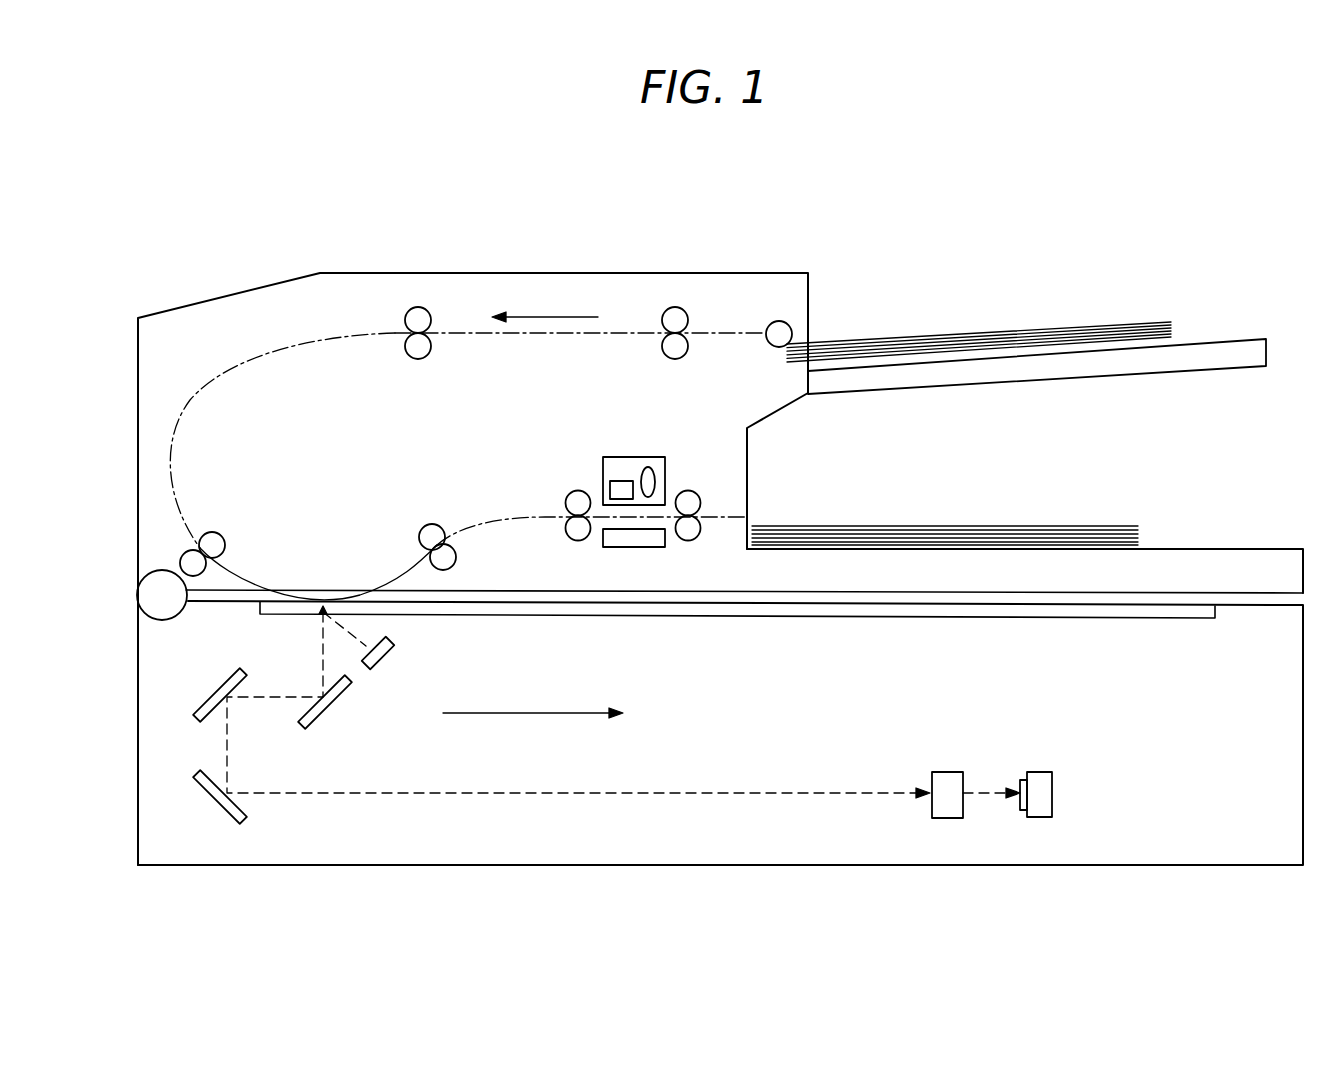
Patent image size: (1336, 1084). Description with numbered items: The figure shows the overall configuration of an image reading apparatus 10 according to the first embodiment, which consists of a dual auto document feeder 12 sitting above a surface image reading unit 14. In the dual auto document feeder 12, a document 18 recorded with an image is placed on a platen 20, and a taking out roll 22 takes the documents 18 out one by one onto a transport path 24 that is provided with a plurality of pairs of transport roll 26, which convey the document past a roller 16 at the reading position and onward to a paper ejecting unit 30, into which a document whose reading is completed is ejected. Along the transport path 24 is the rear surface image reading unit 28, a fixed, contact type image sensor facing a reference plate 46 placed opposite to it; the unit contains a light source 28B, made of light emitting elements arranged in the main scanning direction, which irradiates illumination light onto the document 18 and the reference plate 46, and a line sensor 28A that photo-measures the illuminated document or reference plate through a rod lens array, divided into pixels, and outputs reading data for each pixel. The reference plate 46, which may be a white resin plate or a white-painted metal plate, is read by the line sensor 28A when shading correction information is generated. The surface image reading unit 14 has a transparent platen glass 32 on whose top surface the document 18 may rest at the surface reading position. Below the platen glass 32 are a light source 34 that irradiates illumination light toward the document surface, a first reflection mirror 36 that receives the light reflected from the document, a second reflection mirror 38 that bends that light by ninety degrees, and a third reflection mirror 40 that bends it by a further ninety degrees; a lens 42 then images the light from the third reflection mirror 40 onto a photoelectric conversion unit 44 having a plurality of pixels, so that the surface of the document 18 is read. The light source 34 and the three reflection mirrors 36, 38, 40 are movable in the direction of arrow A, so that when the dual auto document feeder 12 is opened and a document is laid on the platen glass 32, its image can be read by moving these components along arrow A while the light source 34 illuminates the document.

The image reading apparatus 10 is at (1201, 207).
The dual auto document feeder (DADF) 12 is at (138, 437).
The surface image reading unit 14 is at (138, 752).
The platen roller 16 is at (139, 597).
The document 18 is at (1055, 322).
The platen 20 is at (1225, 340).
The taking out roll 22 is at (793, 324).
The transport path 24 is at (478, 299).
The transport roll 26 is at (231, 529).
The rear surface image reading unit 28 is at (627, 457).
The line sensor 28A is at (612, 481).
The light source 28B is at (655, 466).
The paper ejecting unit 30 is at (1230, 548).
The platen glass 32 is at (1214, 619).
The light source 34 is at (391, 652).
The first reflection mirror 36 is at (333, 713).
The second reflection mirror 38 is at (210, 692).
The third reflection mirror 40 is at (210, 795).
The lens 42 is at (950, 772).
The photoelectric conversion unit 44 is at (1042, 772).
The reference plate 46 is at (622, 547).